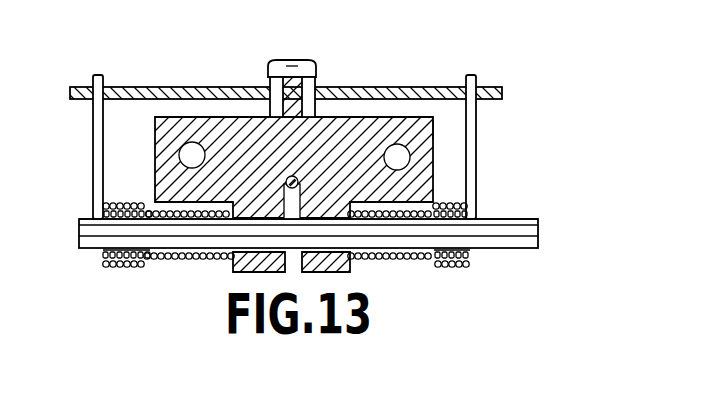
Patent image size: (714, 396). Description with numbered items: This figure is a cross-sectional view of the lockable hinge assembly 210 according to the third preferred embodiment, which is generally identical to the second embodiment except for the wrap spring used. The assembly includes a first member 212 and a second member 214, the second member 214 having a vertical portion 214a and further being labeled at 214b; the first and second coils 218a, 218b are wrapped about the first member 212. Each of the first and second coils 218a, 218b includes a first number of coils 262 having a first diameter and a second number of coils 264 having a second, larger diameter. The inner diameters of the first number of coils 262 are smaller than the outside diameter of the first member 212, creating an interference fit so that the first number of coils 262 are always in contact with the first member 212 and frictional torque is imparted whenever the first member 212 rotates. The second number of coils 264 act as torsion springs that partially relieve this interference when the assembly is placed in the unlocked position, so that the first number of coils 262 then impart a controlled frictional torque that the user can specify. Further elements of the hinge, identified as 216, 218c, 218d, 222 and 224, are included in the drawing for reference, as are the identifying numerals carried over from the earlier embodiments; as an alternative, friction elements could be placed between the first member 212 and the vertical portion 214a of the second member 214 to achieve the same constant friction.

The lockable hinge assembly 210 is at (434, 53).
The first member 212 is at (514, 232).
The second member 214 is at (346, 133).
The vertical portion 214a is at (343, 270).
The block side wall 214b is at (420, 130).
The bore 216 is at (186, 156).
The first coil 218a is at (113, 266).
The second coil 218b is at (440, 268).
The left post 218c is at (98, 76).
The right post 218d is at (472, 76).
The top plate 222 is at (277, 78).
The screw head 224 is at (290, 76).
The first number of coils 262 is at (183, 262).
The second number of coils 264 is at (100, 268).